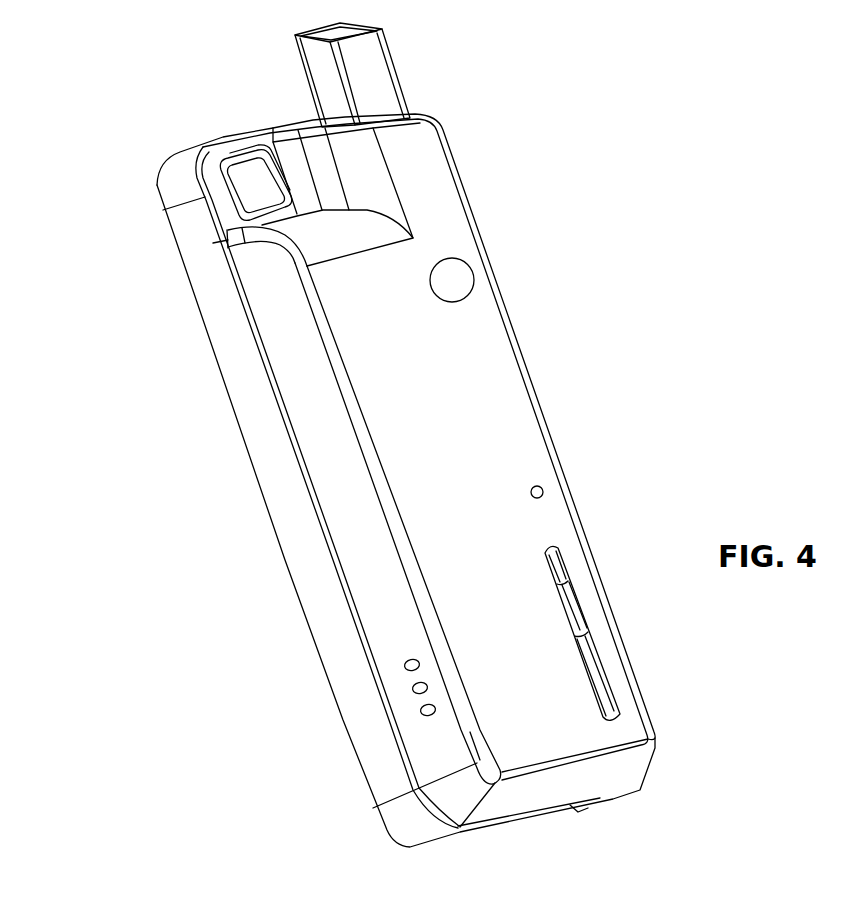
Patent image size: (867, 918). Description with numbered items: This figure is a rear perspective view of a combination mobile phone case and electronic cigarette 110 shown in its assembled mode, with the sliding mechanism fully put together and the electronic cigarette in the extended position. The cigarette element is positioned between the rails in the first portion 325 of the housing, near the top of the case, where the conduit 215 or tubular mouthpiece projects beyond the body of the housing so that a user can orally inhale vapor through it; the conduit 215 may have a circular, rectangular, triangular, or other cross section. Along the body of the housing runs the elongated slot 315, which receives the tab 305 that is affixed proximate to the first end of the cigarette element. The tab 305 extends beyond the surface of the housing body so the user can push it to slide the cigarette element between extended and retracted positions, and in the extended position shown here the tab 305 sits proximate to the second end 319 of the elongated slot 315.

The portable electronic device / case body 110 is at (152, 133).
The conduit 215 is at (311, 93).
The first portion of the housing 325 is at (318, 148).
The second end of the elongated slot 319 is at (556, 550).
The tab 305 is at (572, 600).
The elongated slot 315 is at (605, 676).